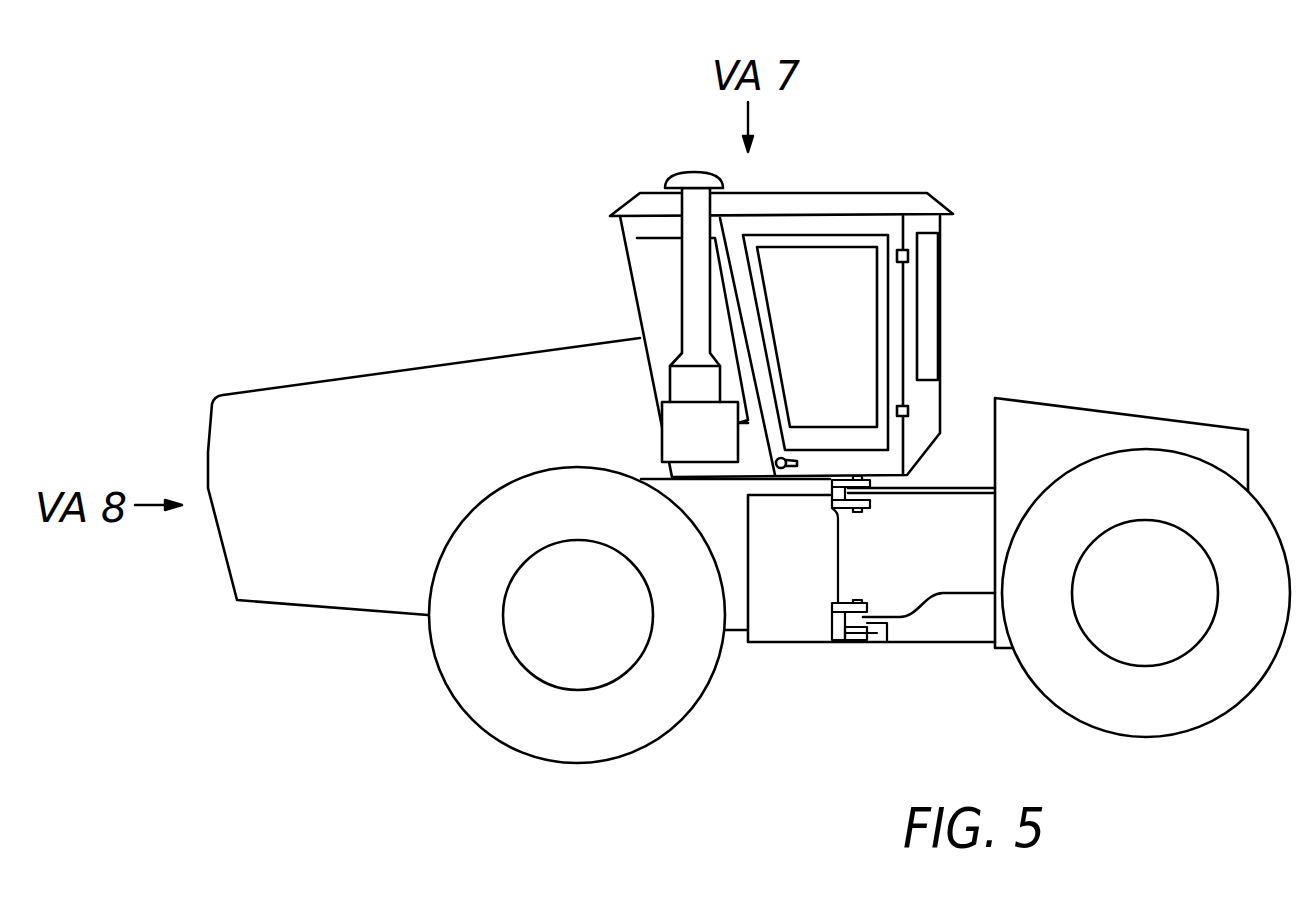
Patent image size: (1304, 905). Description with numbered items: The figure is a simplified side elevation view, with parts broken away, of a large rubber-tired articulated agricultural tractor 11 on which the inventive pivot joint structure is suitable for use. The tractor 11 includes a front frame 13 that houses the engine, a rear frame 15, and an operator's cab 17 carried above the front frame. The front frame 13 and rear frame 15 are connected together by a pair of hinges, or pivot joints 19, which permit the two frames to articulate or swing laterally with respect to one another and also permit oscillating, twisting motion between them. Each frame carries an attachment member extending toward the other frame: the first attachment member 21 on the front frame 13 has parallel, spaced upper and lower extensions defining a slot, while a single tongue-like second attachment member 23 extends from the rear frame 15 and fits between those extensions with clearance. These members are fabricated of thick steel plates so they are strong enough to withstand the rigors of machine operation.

The agricultural tractor 11 is at (749, 450).
The front frame 13 is at (505, 355).
The rear frame 15 is at (1045, 402).
The operator's cab 17 is at (868, 192).
The pivot joints 19 is at (882, 596).
The first attachment member 21 is at (850, 634).
The second attachment member 23 is at (873, 640).